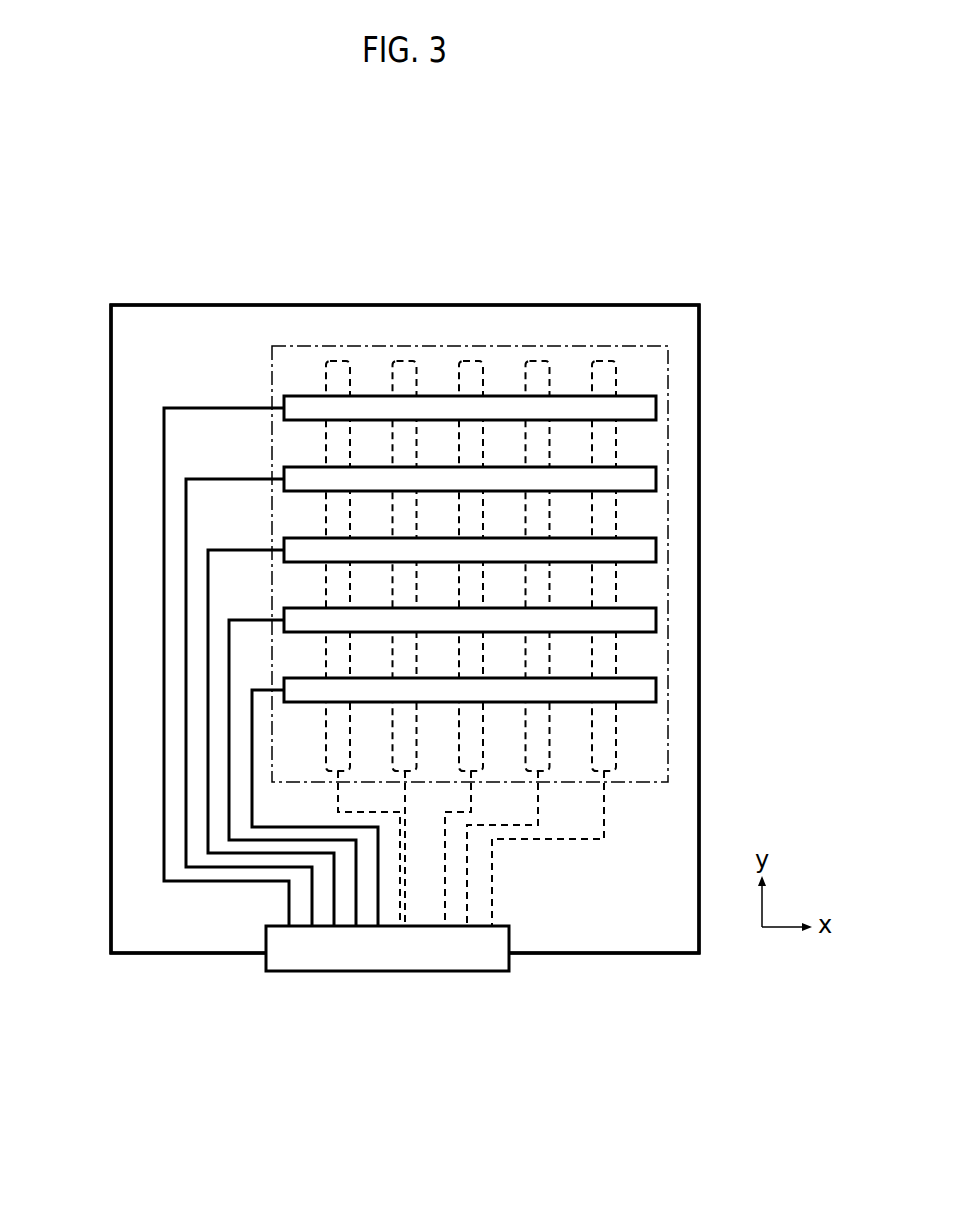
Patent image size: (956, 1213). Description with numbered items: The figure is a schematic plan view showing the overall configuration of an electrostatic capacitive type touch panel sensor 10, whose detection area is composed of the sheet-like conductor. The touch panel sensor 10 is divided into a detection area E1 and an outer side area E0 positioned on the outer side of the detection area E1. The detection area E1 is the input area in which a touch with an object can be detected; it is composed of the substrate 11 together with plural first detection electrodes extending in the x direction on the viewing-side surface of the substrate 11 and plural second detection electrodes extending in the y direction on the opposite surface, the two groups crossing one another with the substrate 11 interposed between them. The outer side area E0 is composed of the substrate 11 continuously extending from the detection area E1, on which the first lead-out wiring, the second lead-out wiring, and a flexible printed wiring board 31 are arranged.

The electrostatic capacitive type touch panel sensor 10 is at (687, 266).
The substrate 11 is at (700, 330).
The flexible printed wiring board 31 is at (266, 961).
The outer side area E0 is at (150, 358).
The detection area E1 is at (286, 368).